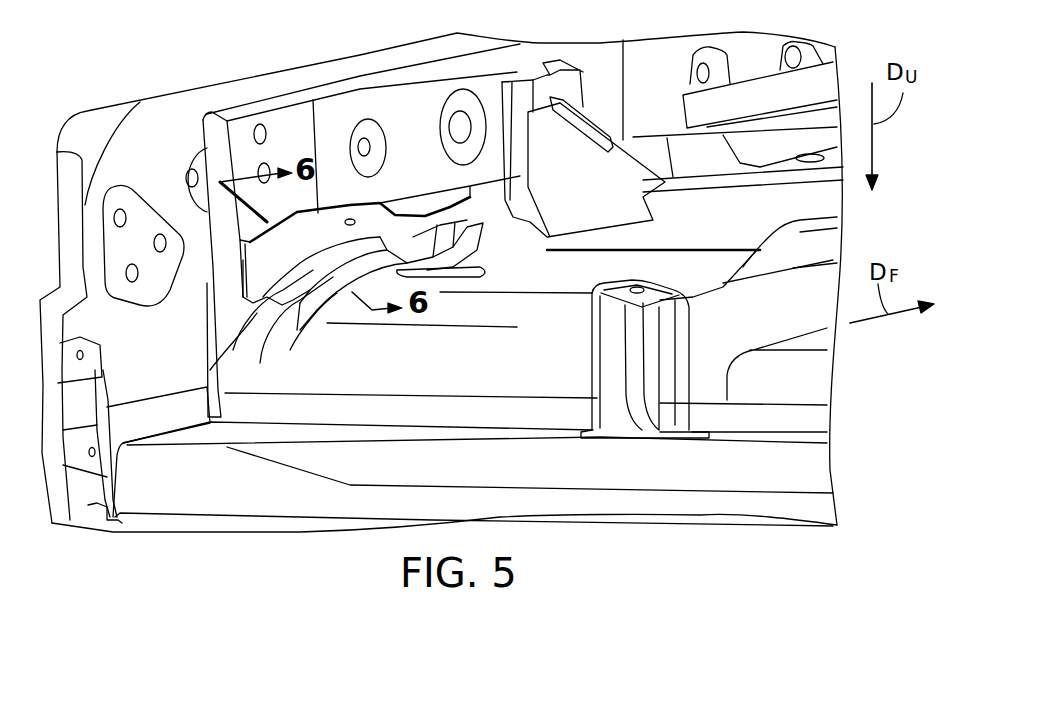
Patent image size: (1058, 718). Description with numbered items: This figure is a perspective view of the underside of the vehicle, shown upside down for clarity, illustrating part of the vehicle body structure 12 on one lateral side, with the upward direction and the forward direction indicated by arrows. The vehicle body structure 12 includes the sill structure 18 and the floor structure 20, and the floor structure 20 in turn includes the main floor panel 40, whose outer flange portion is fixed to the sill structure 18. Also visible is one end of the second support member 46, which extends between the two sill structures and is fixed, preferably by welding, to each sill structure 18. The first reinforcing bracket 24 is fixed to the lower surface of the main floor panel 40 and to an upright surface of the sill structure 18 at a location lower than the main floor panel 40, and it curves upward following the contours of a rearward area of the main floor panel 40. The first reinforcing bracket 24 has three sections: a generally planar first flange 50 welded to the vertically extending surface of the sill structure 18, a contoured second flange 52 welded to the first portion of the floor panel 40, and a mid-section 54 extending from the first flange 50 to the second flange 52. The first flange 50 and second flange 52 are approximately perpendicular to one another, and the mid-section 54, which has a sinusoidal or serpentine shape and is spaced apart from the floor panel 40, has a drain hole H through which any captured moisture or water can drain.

The vehicle body structure 12 is at (274, 41).
The sill structure 18 is at (407, 113).
The floor structure 20 is at (843, 376).
The first reinforcing bracket 24 is at (421, 203).
The main floor panel 40 is at (470, 375).
The second support member 46 is at (622, 218).
The first flange 50 is at (293, 230).
The second flange 52 is at (330, 270).
The mid-section 54 is at (287, 272).
The drain hole H is at (347, 219).